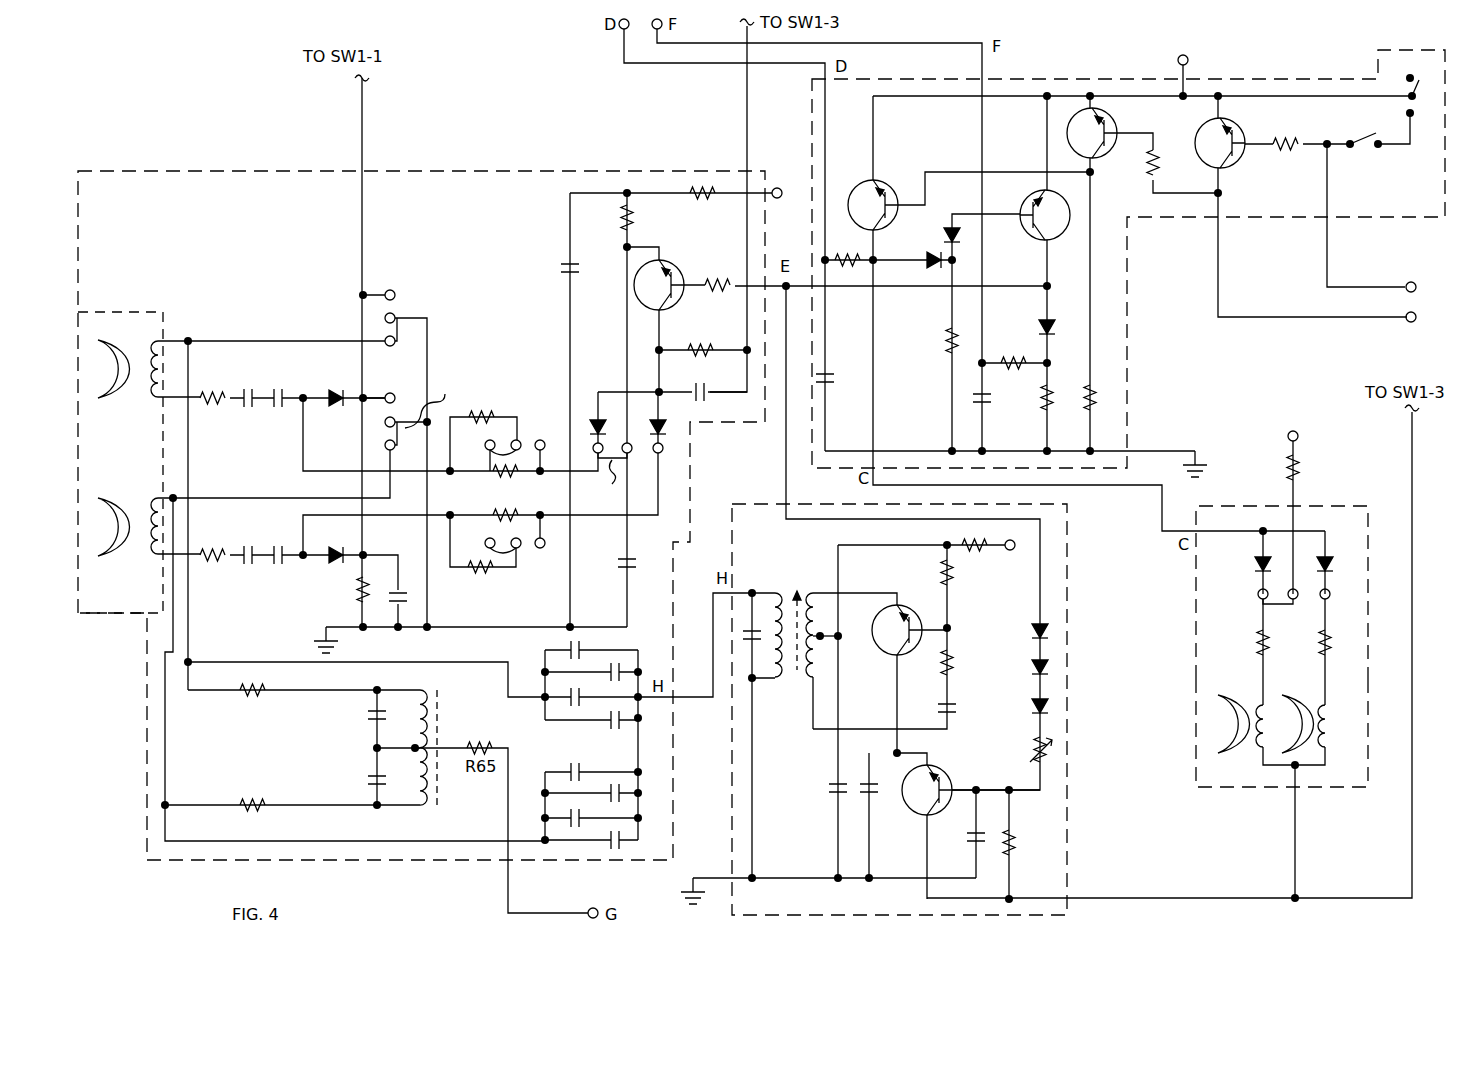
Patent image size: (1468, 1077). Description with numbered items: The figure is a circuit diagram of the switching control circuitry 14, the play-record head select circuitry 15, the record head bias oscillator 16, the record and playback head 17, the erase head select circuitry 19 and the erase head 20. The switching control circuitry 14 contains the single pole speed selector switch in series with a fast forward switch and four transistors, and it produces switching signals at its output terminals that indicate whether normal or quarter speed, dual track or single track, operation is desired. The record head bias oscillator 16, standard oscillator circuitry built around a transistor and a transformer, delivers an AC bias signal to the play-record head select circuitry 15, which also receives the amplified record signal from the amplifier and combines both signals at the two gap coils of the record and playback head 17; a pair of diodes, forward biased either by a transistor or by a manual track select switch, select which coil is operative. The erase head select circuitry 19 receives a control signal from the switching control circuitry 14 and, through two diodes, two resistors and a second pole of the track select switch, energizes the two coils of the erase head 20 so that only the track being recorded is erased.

The switching control circuitry 14 is at (1127, 350).
The play-record head select circuitry 15 is at (147, 855).
The record head bias oscillator 16 is at (740, 635).
The record and playback head 17 is at (163, 312).
The erase head select circuitry 19 is at (1196, 604).
The erase head 20 is at (1196, 754).